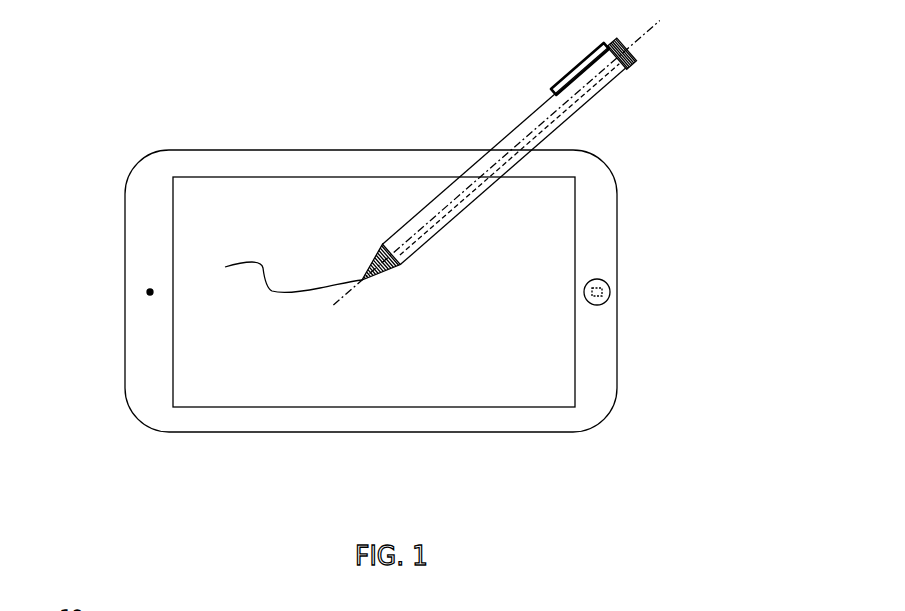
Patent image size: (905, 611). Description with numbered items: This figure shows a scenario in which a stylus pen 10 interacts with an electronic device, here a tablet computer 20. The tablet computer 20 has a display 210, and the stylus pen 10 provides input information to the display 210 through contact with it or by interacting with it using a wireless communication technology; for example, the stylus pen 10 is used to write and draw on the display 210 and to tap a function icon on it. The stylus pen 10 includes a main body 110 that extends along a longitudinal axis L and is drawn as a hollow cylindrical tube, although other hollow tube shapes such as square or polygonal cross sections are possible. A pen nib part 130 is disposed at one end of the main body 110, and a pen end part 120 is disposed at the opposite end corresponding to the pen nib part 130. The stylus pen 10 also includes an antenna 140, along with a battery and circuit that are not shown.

The stylus pen 10 is at (541, 157).
The tablet computer 20 is at (330, 323).
The main body 110 is at (500, 160).
The pen end part 120 is at (636, 57).
The pen nib part 130 is at (378, 272).
The antenna 140 is at (584, 72).
The display 210 is at (261, 397).